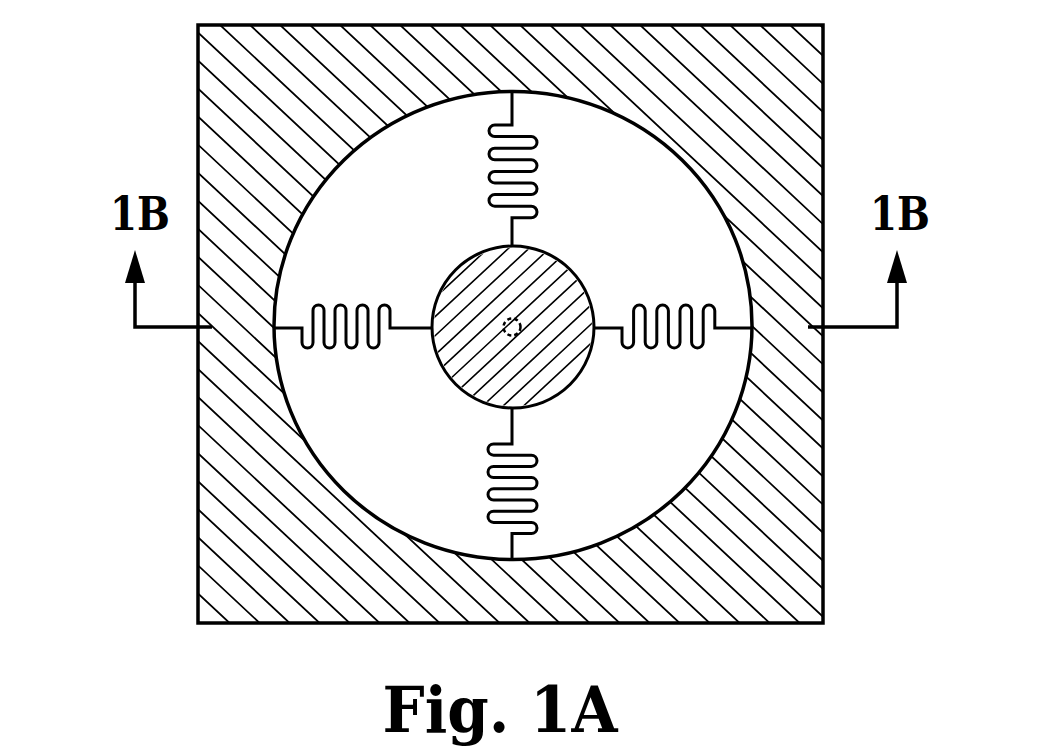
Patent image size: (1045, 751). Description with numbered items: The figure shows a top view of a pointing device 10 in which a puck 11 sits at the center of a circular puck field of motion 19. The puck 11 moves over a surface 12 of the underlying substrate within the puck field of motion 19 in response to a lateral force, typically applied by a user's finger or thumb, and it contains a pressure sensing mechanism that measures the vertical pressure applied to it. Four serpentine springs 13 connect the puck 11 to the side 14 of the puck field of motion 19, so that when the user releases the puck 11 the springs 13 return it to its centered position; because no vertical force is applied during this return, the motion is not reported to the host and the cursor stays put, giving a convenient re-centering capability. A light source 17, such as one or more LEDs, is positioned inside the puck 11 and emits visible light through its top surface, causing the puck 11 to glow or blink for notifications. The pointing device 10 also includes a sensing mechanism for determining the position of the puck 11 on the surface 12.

The pointing device 10 is at (135, 136).
The puck 11 is at (557, 282).
The surface 12 is at (588, 485).
The springs 13 is at (697, 350).
The side 14 is at (808, 485).
The light source 17 is at (512, 317).
The puck field of motion 19 is at (668, 203).